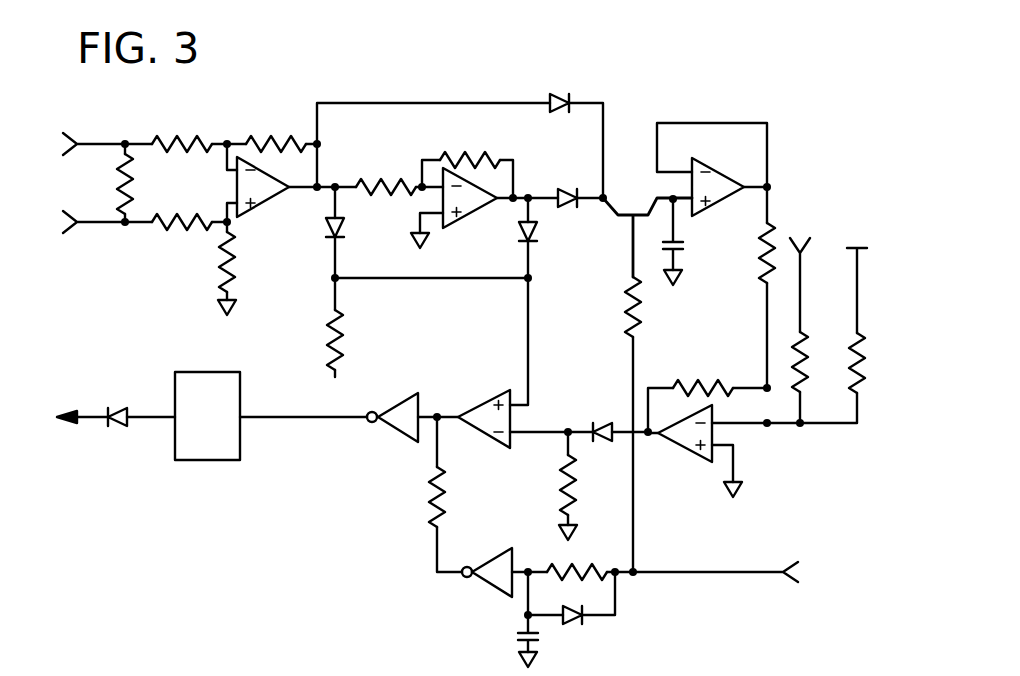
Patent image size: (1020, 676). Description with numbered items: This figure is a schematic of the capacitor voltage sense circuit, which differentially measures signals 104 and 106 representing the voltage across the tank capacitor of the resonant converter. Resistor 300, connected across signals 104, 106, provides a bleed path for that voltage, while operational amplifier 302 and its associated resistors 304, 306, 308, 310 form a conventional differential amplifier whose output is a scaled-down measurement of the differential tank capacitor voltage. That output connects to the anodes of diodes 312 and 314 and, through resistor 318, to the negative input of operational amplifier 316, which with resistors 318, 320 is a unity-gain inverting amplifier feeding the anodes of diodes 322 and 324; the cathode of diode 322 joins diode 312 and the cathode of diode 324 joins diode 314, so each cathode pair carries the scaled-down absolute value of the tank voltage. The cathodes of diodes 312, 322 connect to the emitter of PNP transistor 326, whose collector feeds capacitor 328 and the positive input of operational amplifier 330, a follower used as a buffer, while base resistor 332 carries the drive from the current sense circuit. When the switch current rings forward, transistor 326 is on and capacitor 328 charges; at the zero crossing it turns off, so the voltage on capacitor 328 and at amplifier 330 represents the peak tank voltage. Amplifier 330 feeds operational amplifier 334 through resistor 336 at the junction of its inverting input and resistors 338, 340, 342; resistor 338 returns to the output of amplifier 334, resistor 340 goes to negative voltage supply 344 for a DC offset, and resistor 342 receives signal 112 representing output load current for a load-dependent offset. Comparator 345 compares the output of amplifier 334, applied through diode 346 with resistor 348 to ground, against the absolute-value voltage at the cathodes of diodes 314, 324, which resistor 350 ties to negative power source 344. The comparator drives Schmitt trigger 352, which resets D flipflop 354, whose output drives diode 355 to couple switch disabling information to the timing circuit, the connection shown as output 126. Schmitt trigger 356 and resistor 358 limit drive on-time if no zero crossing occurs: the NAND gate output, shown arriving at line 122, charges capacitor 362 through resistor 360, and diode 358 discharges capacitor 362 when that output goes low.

The signal 104 is at (75, 134).
The signal 106 is at (66, 232).
The signal 112 is at (808, 243).
The output signal line 122 is at (788, 580).
The output signal line 126 is at (77, 403).
The resistor 300 is at (133, 182).
The operational amplifier 302 is at (270, 198).
The resistor 304 is at (180, 134).
The resistor 306 is at (178, 232).
The resistor 308 is at (267, 134).
The resistor 310 is at (234, 277).
The diode 312 is at (560, 96).
The diode 314 is at (345, 226).
The operational amplifier 316 is at (472, 214).
The resistor 318 is at (381, 176).
The resistor 320 is at (468, 160).
The diode 322 is at (568, 190).
The diode 324 is at (540, 233).
The PNP transistor 326 is at (637, 207).
The capacitor 328 is at (680, 240).
The operational amplifier 330 is at (725, 180).
The base resistor 332 is at (625, 312).
The operational amplifier 334 is at (680, 450).
The resistor 336 is at (757, 250).
The resistor 338 is at (690, 386).
The resistor 340 is at (865, 365).
The resistor 342 is at (812, 352).
The negative voltage supply 344 is at (850, 243).
The comparator 345 is at (477, 432).
The diode 346 is at (597, 415).
The resistor 348 is at (578, 468).
The resistor 350 is at (345, 318).
The Schmitt trigger 352 is at (393, 435).
The D flipflop 354 is at (190, 462).
The diode 355 is at (118, 426).
The Schmitt trigger 356 is at (490, 585).
The resistor / diode 358 is at (432, 490).
The resistor 360 is at (560, 565).
The capacitor 362 is at (520, 636).